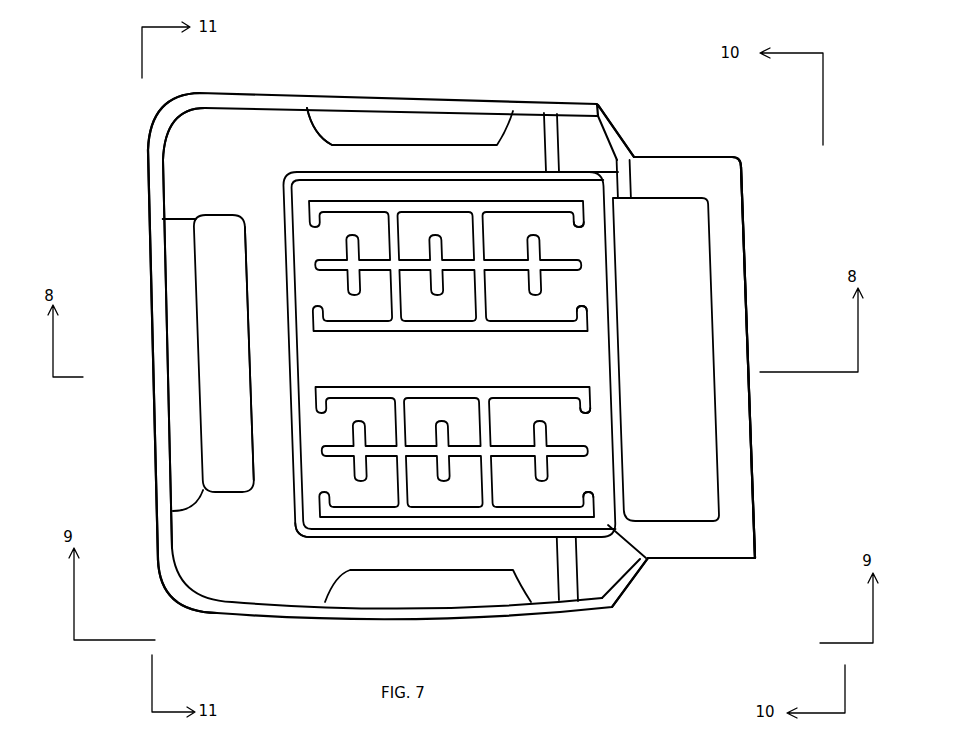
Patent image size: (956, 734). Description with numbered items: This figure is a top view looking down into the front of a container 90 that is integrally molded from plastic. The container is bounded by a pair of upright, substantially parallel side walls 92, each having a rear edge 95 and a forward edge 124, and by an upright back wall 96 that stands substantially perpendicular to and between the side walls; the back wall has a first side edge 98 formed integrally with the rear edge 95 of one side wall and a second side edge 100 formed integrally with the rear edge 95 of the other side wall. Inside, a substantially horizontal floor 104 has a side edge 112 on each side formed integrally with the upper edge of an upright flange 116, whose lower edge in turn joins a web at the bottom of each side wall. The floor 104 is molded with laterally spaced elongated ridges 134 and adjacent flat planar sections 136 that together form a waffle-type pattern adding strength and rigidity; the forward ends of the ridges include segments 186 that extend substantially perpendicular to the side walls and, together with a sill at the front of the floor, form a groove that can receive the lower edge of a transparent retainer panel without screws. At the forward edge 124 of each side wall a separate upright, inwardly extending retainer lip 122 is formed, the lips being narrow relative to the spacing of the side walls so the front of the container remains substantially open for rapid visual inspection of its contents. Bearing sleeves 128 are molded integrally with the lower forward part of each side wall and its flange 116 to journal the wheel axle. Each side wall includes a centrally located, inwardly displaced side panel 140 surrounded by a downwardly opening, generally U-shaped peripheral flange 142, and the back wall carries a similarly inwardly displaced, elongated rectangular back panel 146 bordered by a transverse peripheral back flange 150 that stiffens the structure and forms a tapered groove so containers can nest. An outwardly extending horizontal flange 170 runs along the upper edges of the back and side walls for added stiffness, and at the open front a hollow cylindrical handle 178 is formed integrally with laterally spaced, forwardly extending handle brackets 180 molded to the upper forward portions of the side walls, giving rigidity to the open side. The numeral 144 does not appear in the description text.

The container 90 is at (124, 417).
The side wall 92 is at (272, 120).
The rear edge 95 is at (194, 143).
The back wall 96 is at (174, 191).
The first side edge 98 is at (186, 144).
The second side edge 100 is at (197, 587).
The floor 104 is at (281, 521).
The side edge 112 is at (323, 175).
The upright flange 116 is at (571, 159).
The retainer lip 122 is at (613, 208).
The forward edge 124 is at (625, 133).
The bearing sleeve 128 is at (538, 136).
The elongated ridge 134 is at (470, 182).
The flat planar section 136 is at (358, 225).
The side panel 140 is at (413, 148).
The peripheral flange 142 is at (280, 143).
The pad edge 144 is at (262, 335).
The back panel 146 is at (229, 383).
The back flange 150 is at (190, 213).
The horizontal flange 170 is at (150, 175).
The handle 178 is at (747, 292).
The handle bracket 180 is at (692, 170).
The segment 186 is at (583, 220).